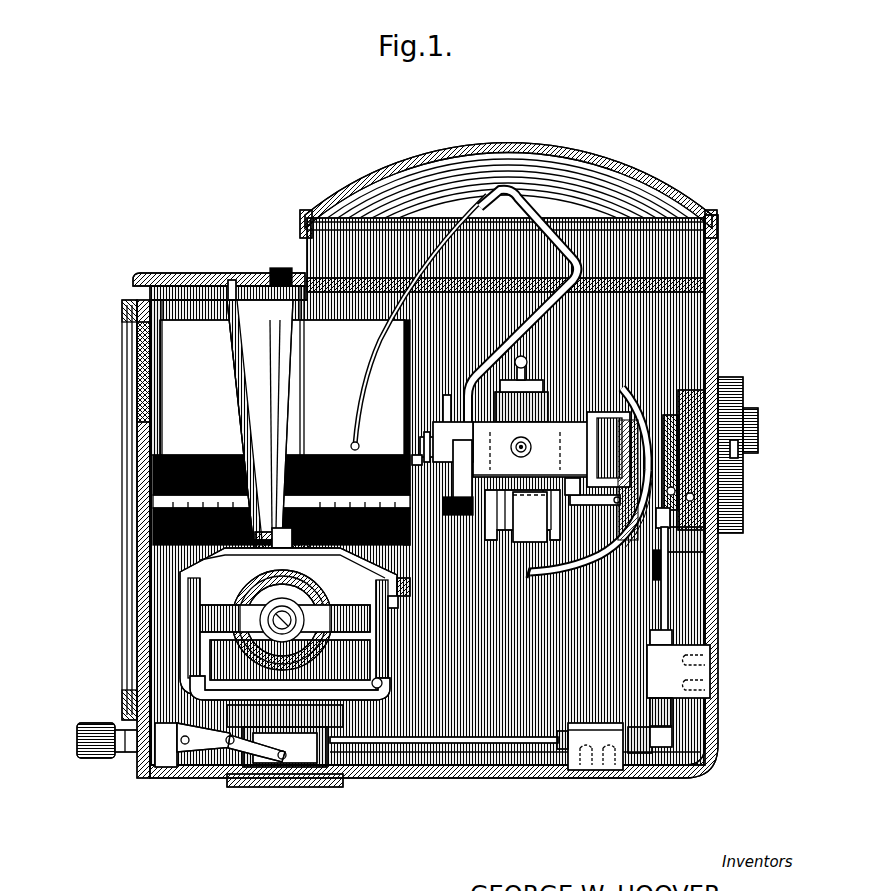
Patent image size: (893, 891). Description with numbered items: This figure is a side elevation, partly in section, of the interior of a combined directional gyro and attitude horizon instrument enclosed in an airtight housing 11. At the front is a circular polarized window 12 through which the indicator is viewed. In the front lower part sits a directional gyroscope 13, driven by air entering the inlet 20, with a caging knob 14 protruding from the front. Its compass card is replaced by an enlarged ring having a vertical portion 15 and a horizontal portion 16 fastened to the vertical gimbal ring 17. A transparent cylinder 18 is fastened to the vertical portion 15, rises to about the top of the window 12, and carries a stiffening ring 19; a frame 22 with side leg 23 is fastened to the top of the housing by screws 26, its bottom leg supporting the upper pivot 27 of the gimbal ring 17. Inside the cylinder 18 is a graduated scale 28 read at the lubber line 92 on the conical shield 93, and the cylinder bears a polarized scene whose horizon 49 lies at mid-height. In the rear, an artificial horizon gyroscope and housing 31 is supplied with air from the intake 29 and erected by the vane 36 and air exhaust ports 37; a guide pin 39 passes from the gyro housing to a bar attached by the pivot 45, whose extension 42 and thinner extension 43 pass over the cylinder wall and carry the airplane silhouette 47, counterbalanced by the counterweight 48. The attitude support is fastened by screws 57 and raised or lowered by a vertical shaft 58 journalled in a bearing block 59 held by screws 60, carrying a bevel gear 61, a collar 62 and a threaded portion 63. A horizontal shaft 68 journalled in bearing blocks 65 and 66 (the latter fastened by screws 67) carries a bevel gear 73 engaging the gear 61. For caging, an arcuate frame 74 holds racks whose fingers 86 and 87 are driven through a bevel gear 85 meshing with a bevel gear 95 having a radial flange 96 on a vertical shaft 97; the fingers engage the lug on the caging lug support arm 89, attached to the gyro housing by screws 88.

The housing 11 is at (541, 778).
The window 12 is at (133, 456).
The directional gyroscope 13 is at (403, 694).
The caging knob 14 is at (78, 743).
The vertical portion 15 is at (410, 585).
The horizontal portion 16 is at (398, 602).
The vertical gimbal ring 17 is at (388, 661).
The cylinder 18 is at (142, 367).
The stiffening ring 19 is at (398, 322).
The inlet 20 is at (252, 787).
The frame 22 is at (327, 349).
The side leg 23 is at (250, 393).
The screws 26 is at (232, 284).
The upper pivot 27 is at (303, 528).
The graduated scale 28 is at (210, 505).
The intake 29 is at (735, 377).
The gyroscope and housing 31 is at (562, 398).
The vane 36 is at (487, 540).
The air exhaust ports 37 is at (518, 538).
The guide pin 39 is at (420, 440).
The extension 42 is at (527, 323).
The thinner extension 43 is at (373, 353).
The pivot 45 is at (531, 449).
The silhouette 47 is at (351, 443).
The counterweight 48 is at (452, 515).
The horizon 49 is at (200, 452).
The screws 57 is at (698, 545).
The vertical shaft 58 is at (668, 612).
The bearing block 59 is at (648, 661).
The screws 60 is at (700, 668).
The bevel gear 61 is at (672, 735).
The collar 62 is at (672, 640).
The threaded portion 63 is at (662, 568).
The bearing block 65 is at (162, 735).
The bearing block 66 is at (583, 730).
The screws 67 is at (594, 768).
The horizontal shaft 68 is at (484, 737).
The bevel gear 73 is at (655, 770).
The frame 74 is at (560, 575).
The bevel gear 85 is at (630, 530).
The finger 86 is at (620, 395).
The finger 87 is at (522, 572).
The screws 88 is at (574, 507).
The caging lug support arm 89 is at (594, 491).
The lubber line 92 is at (414, 466).
The conical shield 93 is at (330, 548).
The bevel gear 95 is at (695, 497).
The radial flange 96 is at (675, 490).
The vertical shaft 97 is at (660, 540).